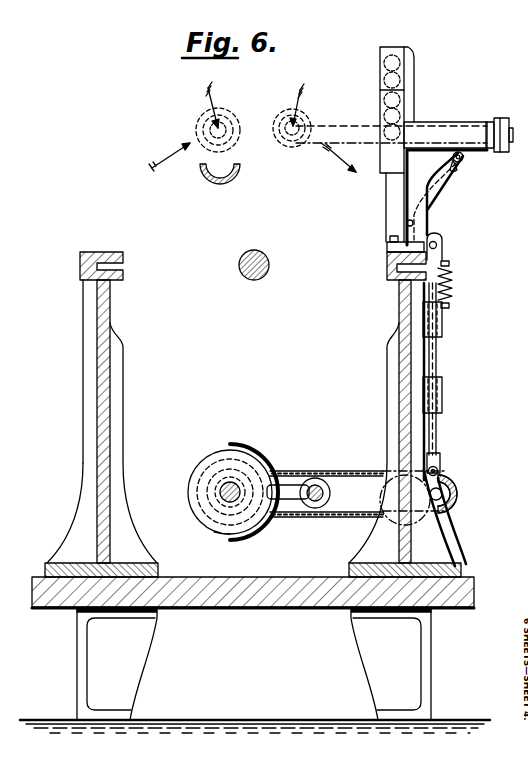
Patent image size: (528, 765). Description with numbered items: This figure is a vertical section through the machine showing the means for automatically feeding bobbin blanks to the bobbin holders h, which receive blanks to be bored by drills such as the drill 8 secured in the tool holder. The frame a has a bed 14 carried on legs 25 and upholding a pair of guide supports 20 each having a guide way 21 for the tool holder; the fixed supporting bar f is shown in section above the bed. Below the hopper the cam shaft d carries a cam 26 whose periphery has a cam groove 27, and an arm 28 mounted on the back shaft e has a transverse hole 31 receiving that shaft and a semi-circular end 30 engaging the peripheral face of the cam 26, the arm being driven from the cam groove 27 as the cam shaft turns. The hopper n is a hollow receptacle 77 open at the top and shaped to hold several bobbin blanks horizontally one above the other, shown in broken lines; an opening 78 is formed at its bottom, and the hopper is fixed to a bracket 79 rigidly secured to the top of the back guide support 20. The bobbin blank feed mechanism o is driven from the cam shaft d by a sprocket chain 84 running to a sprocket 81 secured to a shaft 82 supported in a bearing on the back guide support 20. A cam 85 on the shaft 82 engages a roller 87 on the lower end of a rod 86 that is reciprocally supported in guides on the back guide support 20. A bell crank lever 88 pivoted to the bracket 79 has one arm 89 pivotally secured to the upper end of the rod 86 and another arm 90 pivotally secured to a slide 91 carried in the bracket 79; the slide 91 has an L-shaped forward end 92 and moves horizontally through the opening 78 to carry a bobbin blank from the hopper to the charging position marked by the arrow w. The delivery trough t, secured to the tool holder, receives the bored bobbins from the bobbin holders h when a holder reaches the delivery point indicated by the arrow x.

The drill 8 is at (220, 478).
The bed 14 is at (262, 598).
The guide support 20 is at (88, 390).
The guide way 21 is at (112, 266).
The wide-faced pinion 25 is at (82, 657).
The cam 26 is at (206, 509).
The cam groove 27 is at (216, 519).
The arm 28 is at (285, 484).
The semi-circular end 30 is at (251, 456).
The transverse hole 31 is at (318, 480).
The hollow receptacle 77 is at (380, 62).
The opening 78 is at (404, 127).
The bracket 79 is at (389, 208).
The sprocket 81 is at (443, 477).
The shaft 82 is at (450, 494).
The sprocket chain 84 is at (356, 472).
The cam 85 is at (456, 520).
The rod 86 is at (440, 425).
The roller 87 is at (441, 466).
The bell crank lever 88 is at (437, 190).
The arm 89 is at (440, 243).
The arm 90 is at (461, 166).
The slide 91 is at (350, 125).
The L-shaped forward end 92 is at (293, 136).
The frame a is at (33, 579).
The cam shaft d is at (220, 492).
The back shaft e is at (316, 506).
The fixed supporting bar f is at (255, 250).
The bobbin holder h is at (200, 118).
The hopper n is at (416, 84).
The bobbin blank feed mechanism o is at (439, 347).
The delivery trough t is at (221, 190).
The arrow indicating charging point w is at (305, 72).
The arrow indicating delivery point x is at (194, 117).